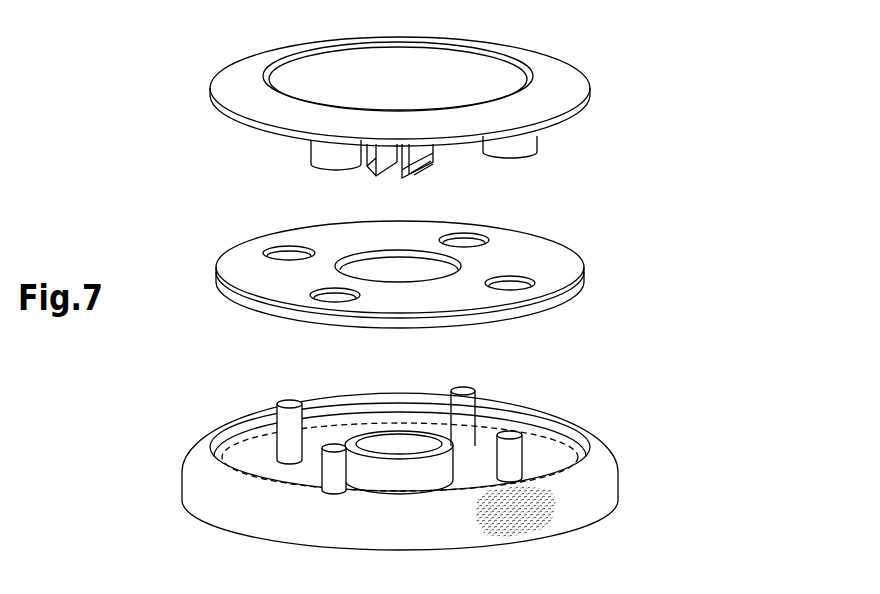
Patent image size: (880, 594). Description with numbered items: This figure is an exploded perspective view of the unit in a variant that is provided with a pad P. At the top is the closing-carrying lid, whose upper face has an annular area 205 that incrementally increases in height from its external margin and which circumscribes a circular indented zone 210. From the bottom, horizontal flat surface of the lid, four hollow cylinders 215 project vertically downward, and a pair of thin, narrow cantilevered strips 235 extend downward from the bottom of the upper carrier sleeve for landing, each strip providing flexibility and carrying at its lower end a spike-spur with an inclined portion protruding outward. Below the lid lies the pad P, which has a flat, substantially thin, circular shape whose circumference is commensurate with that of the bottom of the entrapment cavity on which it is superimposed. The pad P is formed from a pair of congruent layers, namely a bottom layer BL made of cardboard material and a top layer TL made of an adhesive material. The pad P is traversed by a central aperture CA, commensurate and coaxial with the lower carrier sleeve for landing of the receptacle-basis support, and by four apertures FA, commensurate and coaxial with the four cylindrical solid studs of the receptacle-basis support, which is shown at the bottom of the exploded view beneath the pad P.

The annular area 205 is at (426, 104).
The circular indented zone 210 is at (455, 70).
The hollow cylinders 215 is at (537, 151).
The cantilevered strips 235 is at (387, 153).
The top layer TL is at (424, 280).
The bottom layer BL is at (555, 305).
The apertures FA is at (328, 298).
The central aperture CA is at (392, 267).
The pad P is at (600, 264).